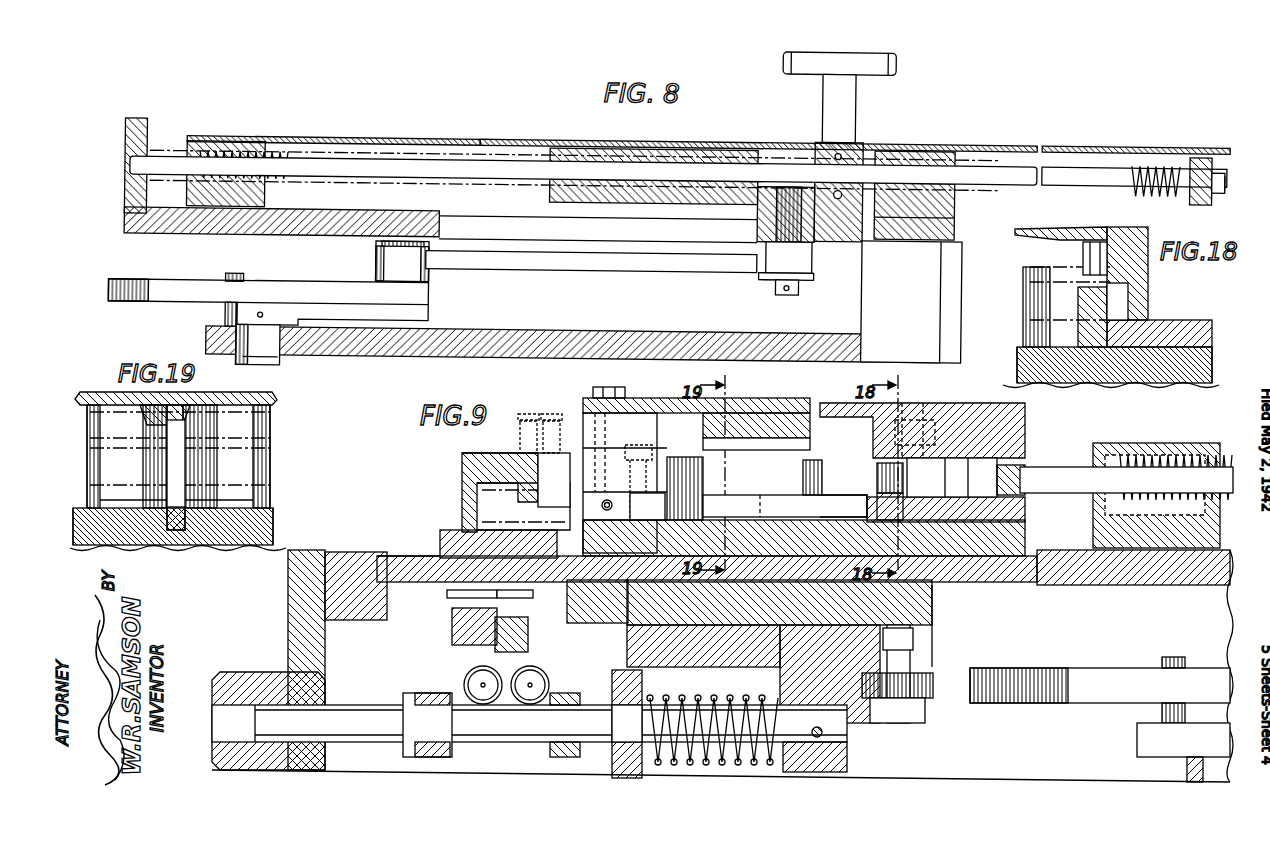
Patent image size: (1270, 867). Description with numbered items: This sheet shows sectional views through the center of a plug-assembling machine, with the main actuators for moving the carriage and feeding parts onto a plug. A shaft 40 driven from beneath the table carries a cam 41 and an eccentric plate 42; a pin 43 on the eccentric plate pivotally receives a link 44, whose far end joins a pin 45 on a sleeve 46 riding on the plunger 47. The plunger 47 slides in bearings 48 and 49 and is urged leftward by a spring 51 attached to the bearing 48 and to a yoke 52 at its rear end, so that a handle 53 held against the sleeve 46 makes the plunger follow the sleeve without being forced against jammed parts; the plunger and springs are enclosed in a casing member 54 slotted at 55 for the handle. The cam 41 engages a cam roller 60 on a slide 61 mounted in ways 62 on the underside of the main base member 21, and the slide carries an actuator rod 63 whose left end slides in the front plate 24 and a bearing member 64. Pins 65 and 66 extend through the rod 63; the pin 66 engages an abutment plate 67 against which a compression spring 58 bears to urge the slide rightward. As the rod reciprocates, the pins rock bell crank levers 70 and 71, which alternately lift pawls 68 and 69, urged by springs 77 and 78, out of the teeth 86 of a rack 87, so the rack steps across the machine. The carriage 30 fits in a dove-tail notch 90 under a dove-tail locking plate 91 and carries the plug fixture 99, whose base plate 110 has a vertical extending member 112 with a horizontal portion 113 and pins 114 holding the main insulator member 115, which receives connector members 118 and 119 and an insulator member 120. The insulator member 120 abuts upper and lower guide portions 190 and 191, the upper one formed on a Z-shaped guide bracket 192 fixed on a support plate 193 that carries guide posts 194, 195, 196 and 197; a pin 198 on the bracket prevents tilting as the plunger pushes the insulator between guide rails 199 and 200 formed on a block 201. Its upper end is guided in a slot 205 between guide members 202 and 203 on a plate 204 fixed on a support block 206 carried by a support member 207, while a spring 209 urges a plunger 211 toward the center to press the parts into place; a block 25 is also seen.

In FIG. 8, the main base member 21 is at (278, 232).
In FIG. 18, the main base member 21 is at (1012, 382).
In FIG. 19, the main base member 21 is at (276, 545).
In FIG. 9, the main base member 21 is at (1032, 584).
In FIG. 9, the front plate 24 is at (305, 550).
In FIG. 8, the block 25 is at (948, 270).
In FIG. 9, the carriage 30 is at (415, 556).
In FIG. 8, the shaft 40 is at (248, 326).
In FIG. 9, the shaft 40 is at (1187, 771).
In FIG. 8, the cam 41 is at (150, 268).
In FIG. 9, the cam 41 is at (1000, 674).
In FIG. 8, the eccentric plate 42 is at (240, 278).
In FIG. 9, the eccentric plate 42 is at (1177, 657).
In FIG. 8, the pin 43 is at (405, 238).
In FIG. 8, the link 44 is at (540, 252).
In FIG. 8, the pin 45 is at (770, 222).
In FIG. 8, the sleeve 46 is at (628, 146).
In FIG. 8, the plunger 47 is at (147, 158).
In FIG. 18, the plunger 47 is at (1120, 300).
In FIG. 19, the plunger 47 is at (186, 472).
In FIG. 9, the plunger 47 is at (1090, 466).
In FIG. 8, the bearing 48 is at (215, 142).
In FIG. 9, the bearing 48 is at (1128, 446).
In FIG. 8, the bearing 49 is at (908, 146).
In FIG. 8, the spring 51 is at (1152, 154).
In FIG. 8, the yoke 52 is at (1202, 146).
In FIG. 8, the handle 53 is at (855, 104).
In FIG. 8, the casing member 54 is at (335, 136).
In FIG. 8, the slot 55 is at (480, 136).
In FIG. 9, the compression spring 58 is at (712, 700).
In FIG. 9, the cam roller 60 is at (933, 682).
In FIG. 9, the slide 61 is at (912, 645).
In FIG. 9, the ways 62 is at (920, 612).
In FIG. 9, the actuator rod 63 is at (848, 738).
In FIG. 9, the bearing member 64 is at (235, 672).
In FIG. 9, the pin 65 is at (408, 693).
In FIG. 9, the pin 66 is at (615, 770).
In FIG. 9, the abutment plate 67 is at (642, 685).
In FIG. 9, the pawl 68 is at (528, 640).
In FIG. 9, the pawl 69 is at (452, 627).
In FIG. 9, the bell crank lever 70 is at (440, 752).
In FIG. 9, the bell crank lever 71 is at (552, 750).
In FIG. 9, the spring 77 is at (535, 684).
In FIG. 9, the spring 78 is at (480, 684).
In FIG. 9, the teeth 86 is at (533, 594).
In FIG. 9, the rack 87 is at (447, 594).
In FIG. 9, the dove-tail notch 90 is at (590, 608).
In FIG. 9, the dove-tail locking plate 91 is at (377, 556).
In FIG. 9, the plug fixture 99 is at (445, 502).
In FIG. 9, the base plate 110 is at (445, 548).
In FIG. 9, the vertical extending member 112 is at (470, 495).
In FIG. 9, the portion 113 is at (490, 452).
In FIG. 9, the pins 114 is at (518, 453).
In FIG. 9, the main insulator member 115 is at (520, 452).
In FIG. 19, the connector member 118 is at (125, 394).
In FIG. 9, the connector member 118 is at (770, 462).
In FIG. 19, the connector member 119 is at (270, 433).
In FIG. 9, the insulator member 120 is at (968, 478).
In FIG. 18, the upper guide portion 190 is at (1115, 246).
In FIG. 9, the upper guide portion 190 is at (1000, 432).
In FIG. 18, the lower guide portion 191 is at (1100, 332).
In FIG. 9, the lower guide portion 191 is at (1010, 510).
In FIG. 18, the Z-shaped guide bracket 192 is at (1180, 330).
In FIG. 18, the support plate 193 is at (1150, 372).
In FIG. 19, the support plate 193 is at (200, 548).
In FIG. 9, the support plate 193 is at (1010, 545).
In FIG. 9, the guide post 194 is at (1022, 462).
In FIG. 18, the guide post 195 is at (1080, 300).
In FIG. 9, the guide post 195 is at (885, 464).
In FIG. 9, the guide post 196 is at (818, 460).
In FIG. 9, the guide post 197 is at (700, 482).
In FIG. 18, the pin 198 is at (1083, 252).
In FIG. 9, the pin 198 is at (940, 403).
In FIG. 19, the guide rail 199 is at (165, 497).
In FIG. 9, the guide rail 199 is at (828, 497).
In FIG. 19, the guide rail 200 is at (185, 497).
In FIG. 9, the block 201 is at (775, 530).
In FIG. 19, the guide member 202 is at (150, 438).
In FIG. 19, the guide member 203 is at (185, 440).
In FIG. 19, the plate 204 is at (265, 395).
In FIG. 9, the plate 204 is at (645, 405).
In FIG. 19, the slot 205 is at (182, 418).
In FIG. 9, the slot 205 is at (740, 430).
In FIG. 9, the support block 206 is at (585, 420).
In FIG. 9, the support member 207 is at (640, 462).
In FIG. 9, the spring 209 is at (665, 508).
In FIG. 9, the plunger 211 is at (602, 507).